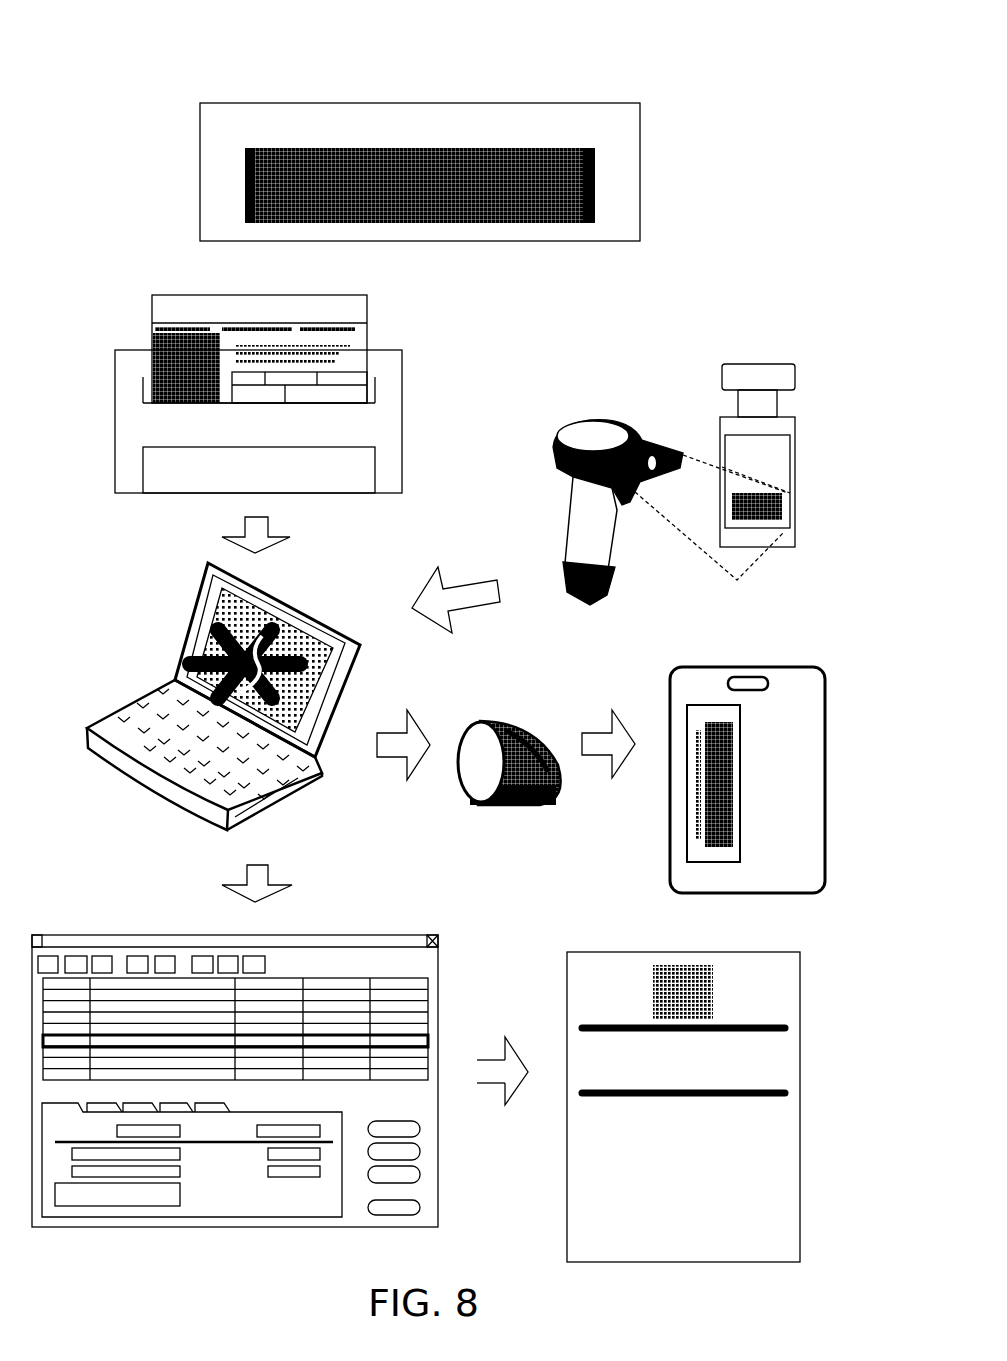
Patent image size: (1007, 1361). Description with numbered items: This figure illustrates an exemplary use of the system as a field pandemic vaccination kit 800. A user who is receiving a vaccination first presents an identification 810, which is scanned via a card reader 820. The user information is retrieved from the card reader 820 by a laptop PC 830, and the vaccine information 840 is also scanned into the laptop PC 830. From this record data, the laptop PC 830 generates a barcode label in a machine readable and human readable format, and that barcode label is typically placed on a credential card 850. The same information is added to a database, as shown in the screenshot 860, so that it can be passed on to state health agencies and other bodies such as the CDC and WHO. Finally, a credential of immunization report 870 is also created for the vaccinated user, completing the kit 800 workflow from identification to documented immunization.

The field pandemic vaccination kit 800 is at (587, 65).
The identification 810 is at (188, 295).
The card reader 820 is at (170, 493).
The laptop PC 830 is at (155, 685).
The vaccine information 840 is at (783, 508).
The credential card 850 is at (713, 665).
The screenshot 860 is at (153, 1227).
The credential of immunization report 870 is at (800, 1175).